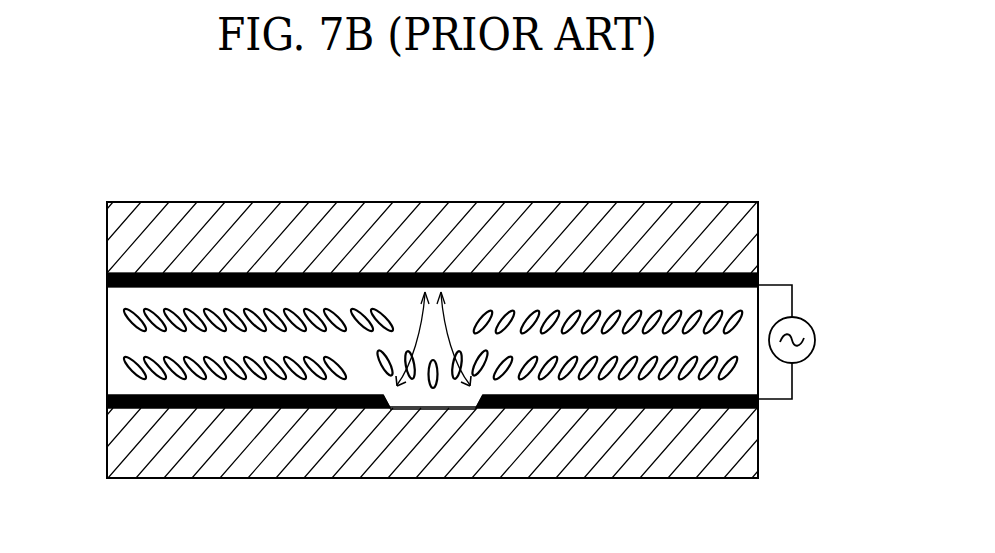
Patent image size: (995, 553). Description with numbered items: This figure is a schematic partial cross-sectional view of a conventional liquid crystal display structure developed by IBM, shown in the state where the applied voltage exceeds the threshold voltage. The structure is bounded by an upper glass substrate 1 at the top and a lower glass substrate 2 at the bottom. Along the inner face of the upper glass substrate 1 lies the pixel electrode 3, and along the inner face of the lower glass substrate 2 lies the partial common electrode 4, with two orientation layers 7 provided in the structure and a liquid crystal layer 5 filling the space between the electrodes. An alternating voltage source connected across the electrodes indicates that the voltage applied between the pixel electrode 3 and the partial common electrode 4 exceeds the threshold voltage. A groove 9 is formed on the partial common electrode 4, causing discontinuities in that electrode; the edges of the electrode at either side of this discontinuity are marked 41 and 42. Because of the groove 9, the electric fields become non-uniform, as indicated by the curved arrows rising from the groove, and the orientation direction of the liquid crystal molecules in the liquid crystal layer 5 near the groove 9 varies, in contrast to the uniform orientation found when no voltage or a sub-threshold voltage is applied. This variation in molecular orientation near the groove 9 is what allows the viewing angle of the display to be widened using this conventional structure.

The upper glass substrate 1 is at (746, 240).
The lower glass substrate 2 is at (750, 446).
The pixel electrode 3 is at (106, 281).
The partial common electrode 4 is at (106, 401).
The liquid crystal layer 5 is at (106, 331).
The orientation layers 7 is at (778, 281).
The groove 9 is at (437, 410).
The left electrode edge 41 is at (383, 408).
The right electrode edge 42 is at (482, 408).